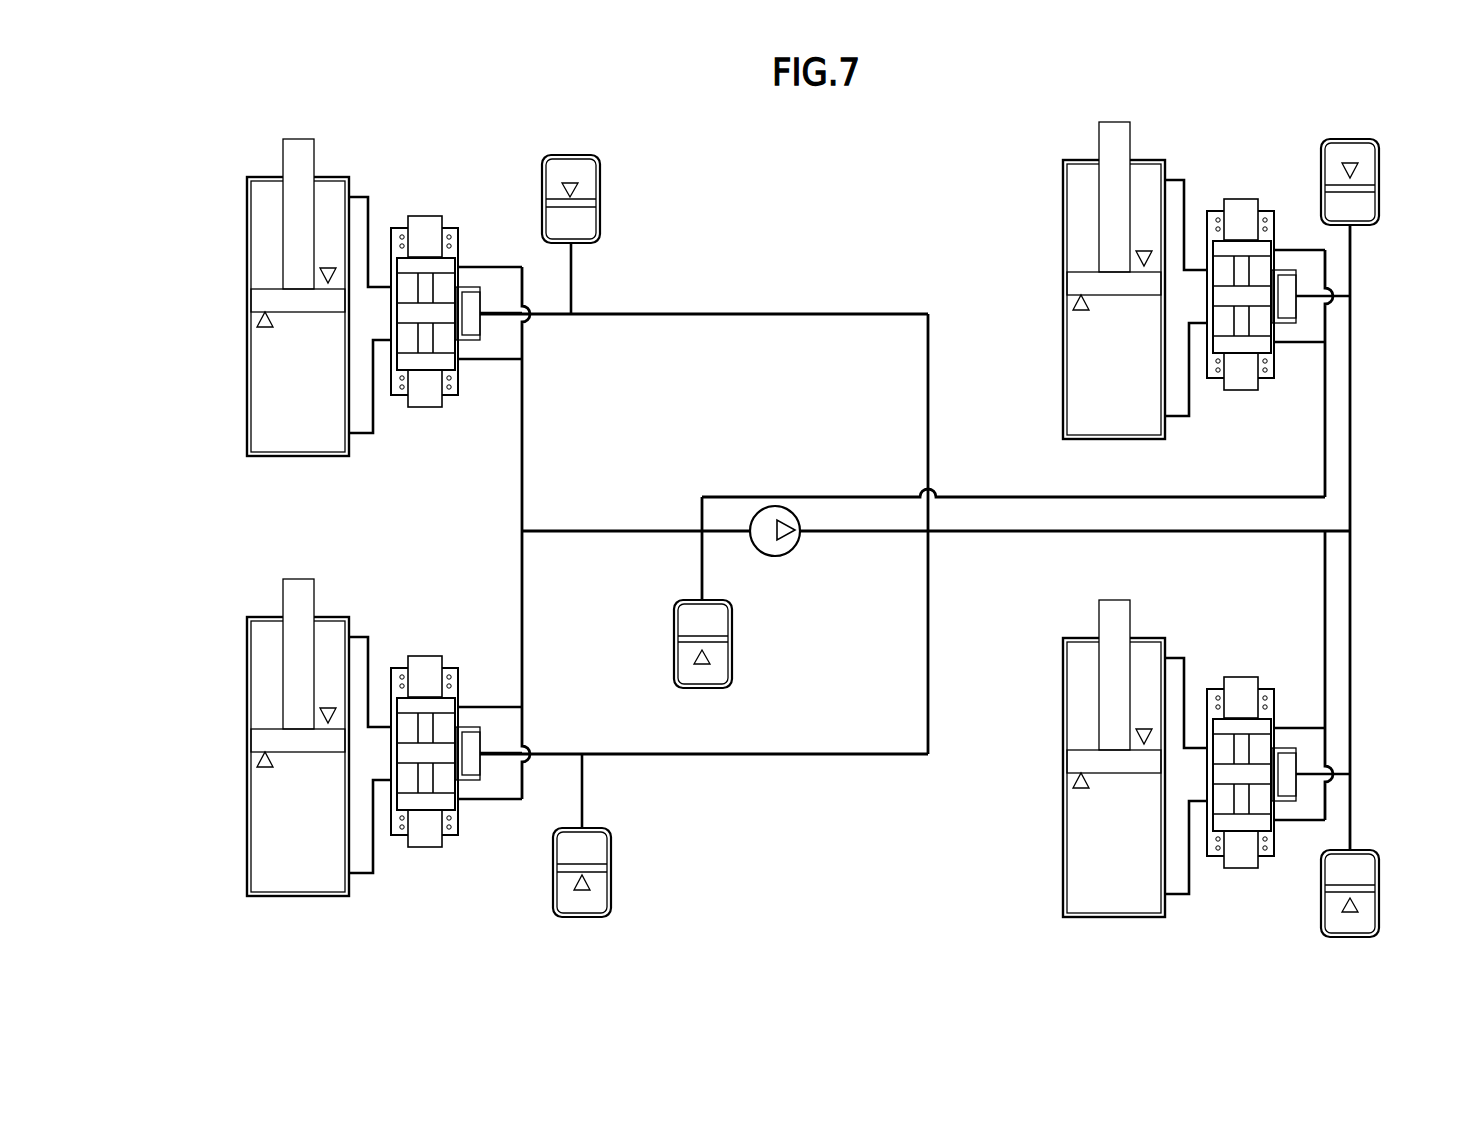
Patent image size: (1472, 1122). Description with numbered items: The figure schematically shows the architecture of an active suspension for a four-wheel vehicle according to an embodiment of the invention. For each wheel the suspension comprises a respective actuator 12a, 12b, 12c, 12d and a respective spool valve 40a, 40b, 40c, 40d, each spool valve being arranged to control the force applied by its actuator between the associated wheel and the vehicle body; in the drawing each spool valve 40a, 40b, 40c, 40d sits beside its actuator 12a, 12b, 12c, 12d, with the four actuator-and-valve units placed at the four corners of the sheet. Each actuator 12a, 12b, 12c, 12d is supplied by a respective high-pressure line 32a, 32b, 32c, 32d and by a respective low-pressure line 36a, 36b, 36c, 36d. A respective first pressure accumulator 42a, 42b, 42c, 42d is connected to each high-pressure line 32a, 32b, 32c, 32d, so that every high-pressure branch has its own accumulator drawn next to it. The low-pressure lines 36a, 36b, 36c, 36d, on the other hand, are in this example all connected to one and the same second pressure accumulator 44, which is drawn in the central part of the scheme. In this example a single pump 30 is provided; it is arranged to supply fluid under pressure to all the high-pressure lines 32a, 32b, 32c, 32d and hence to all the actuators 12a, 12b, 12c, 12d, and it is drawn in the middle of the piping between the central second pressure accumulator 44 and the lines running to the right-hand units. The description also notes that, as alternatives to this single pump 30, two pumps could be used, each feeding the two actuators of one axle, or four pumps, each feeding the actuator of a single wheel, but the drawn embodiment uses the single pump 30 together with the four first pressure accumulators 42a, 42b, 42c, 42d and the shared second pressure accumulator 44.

The actuator 12a is at (227, 263).
The actuator 12b is at (230, 736).
The actuator 12c is at (1058, 253).
The actuator 12d is at (1055, 855).
The spool valve 40a is at (428, 207).
The spool valve 40b is at (432, 647).
The spool valve 40c is at (1242, 187).
The spool valve 40d is at (1243, 673).
The first pressure accumulator 42a is at (600, 208).
The first pressure accumulator 42b is at (612, 886).
The first pressure accumulator 42c is at (1380, 170).
The first pressure accumulator 42d is at (1323, 932).
The high-pressure line 32a is at (767, 313).
The high-pressure line 32b is at (855, 757).
The high-pressure line 32c is at (1353, 422).
The high-pressure line 32d is at (1353, 648).
The low-pressure line 36a is at (524, 438).
The low-pressure line 36b is at (523, 619).
The low-pressure line 36c is at (1325, 454).
The low-pressure line 36d is at (1325, 575).
The pump 30 is at (783, 553).
The second pressure accumulator 44 is at (715, 690).